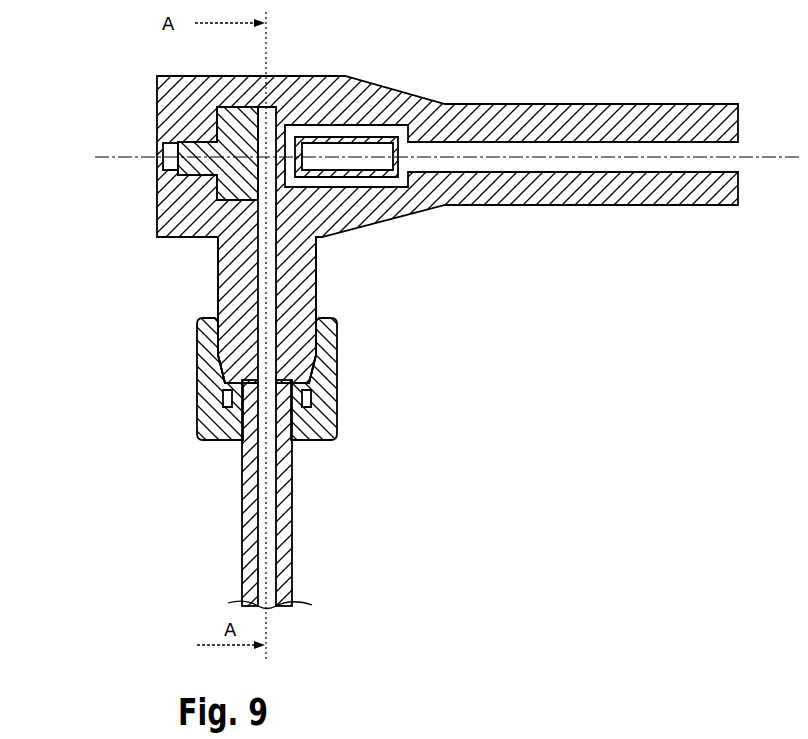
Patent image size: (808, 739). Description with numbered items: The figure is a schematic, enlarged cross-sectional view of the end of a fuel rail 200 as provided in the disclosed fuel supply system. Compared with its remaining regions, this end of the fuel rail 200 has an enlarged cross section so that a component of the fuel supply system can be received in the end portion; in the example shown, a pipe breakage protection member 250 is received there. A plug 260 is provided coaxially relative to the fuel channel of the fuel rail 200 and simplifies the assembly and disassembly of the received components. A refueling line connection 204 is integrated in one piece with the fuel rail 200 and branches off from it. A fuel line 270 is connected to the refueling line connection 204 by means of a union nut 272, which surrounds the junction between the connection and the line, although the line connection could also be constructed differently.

The fluid connector body 200 is at (718, 160).
The refueling line connection 204 is at (218, 293).
The pipe breakage protection member 250 is at (373, 132).
The plug 260 is at (157, 190).
The fuel line 270 is at (242, 531).
The union nut 272 is at (197, 383).